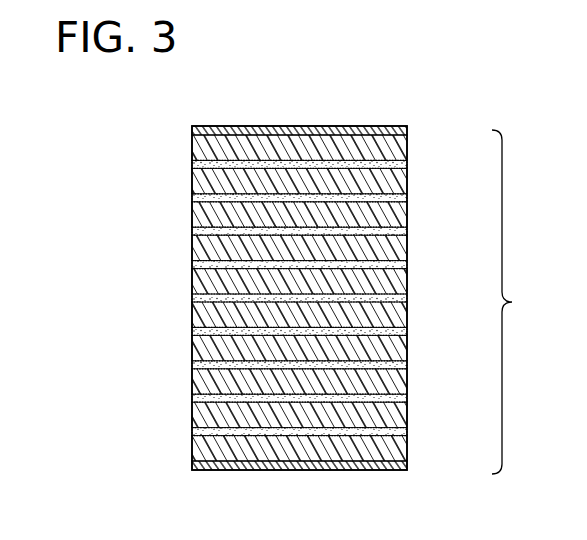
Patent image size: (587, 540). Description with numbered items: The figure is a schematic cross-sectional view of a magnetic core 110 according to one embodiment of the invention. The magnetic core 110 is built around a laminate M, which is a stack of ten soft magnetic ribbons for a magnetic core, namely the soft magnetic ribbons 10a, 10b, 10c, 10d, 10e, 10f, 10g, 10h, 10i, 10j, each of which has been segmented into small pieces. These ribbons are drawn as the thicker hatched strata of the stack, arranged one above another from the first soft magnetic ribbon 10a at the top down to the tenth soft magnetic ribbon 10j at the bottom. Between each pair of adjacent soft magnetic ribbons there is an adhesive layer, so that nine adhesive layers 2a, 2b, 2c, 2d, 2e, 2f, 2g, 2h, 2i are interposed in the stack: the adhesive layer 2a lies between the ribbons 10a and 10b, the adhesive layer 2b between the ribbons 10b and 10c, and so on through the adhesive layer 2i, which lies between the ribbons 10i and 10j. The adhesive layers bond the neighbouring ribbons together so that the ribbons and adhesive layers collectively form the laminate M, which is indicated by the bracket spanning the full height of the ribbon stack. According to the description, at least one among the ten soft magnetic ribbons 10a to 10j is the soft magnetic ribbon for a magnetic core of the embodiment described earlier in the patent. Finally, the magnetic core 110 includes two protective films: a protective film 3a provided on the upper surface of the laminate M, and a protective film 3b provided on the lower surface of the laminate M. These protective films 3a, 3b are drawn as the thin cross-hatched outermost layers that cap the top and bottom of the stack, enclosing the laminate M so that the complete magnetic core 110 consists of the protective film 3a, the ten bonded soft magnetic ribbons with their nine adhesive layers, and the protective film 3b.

The magnetic core 110 is at (434, 115).
The protective film 3a is at (304, 127).
The protective film 3b is at (303, 469).
The soft magnetic ribbon 10a is at (407, 144).
The soft magnetic ribbon 10b is at (407, 177).
The soft magnetic ribbon 10c is at (407, 210).
The soft magnetic ribbon 10d is at (407, 244).
The soft magnetic ribbon 10e is at (407, 277).
The soft magnetic ribbon 10f is at (407, 311).
The soft magnetic ribbon 10g is at (407, 344).
The soft magnetic ribbon 10h is at (407, 378).
The soft magnetic ribbon 10i is at (407, 411).
The soft magnetic ribbon 10j is at (407, 444).
The adhesive layer 2a is at (192, 164).
The adhesive layer 2b is at (192, 198).
The adhesive layer 2c is at (192, 231).
The adhesive layer 2d is at (192, 265).
The adhesive layer 2e is at (192, 298).
The adhesive layer 2f is at (192, 331).
The adhesive layer 2g is at (192, 365).
The adhesive layer 2h is at (192, 398).
The adhesive layer 2i is at (192, 432).
The laminate M is at (514, 302).